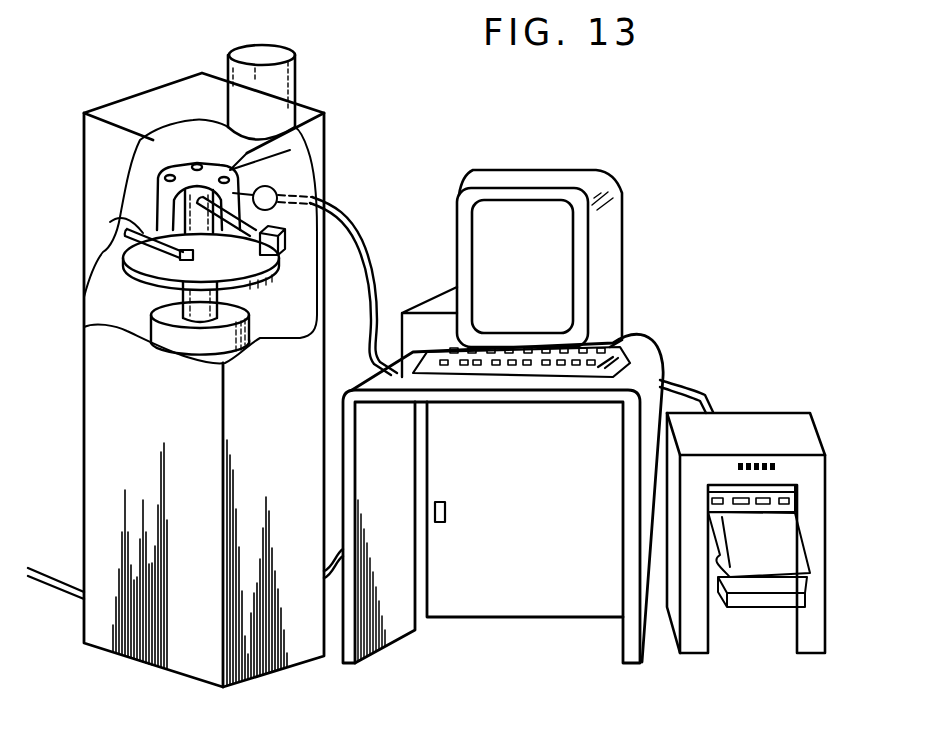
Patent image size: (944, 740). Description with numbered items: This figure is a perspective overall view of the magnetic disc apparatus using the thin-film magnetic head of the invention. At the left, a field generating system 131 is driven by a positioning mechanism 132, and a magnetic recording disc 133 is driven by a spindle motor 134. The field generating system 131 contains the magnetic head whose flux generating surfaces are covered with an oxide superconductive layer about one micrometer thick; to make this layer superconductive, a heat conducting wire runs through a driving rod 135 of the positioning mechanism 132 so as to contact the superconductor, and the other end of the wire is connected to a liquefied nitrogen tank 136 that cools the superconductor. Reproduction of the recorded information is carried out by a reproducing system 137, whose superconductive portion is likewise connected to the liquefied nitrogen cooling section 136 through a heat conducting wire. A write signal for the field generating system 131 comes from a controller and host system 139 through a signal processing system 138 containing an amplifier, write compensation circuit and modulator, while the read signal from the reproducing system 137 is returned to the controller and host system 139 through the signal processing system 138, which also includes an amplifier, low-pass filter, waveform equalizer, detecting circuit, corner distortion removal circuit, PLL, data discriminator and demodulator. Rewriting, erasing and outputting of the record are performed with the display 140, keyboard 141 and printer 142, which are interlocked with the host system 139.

The field generating system 131 is at (283, 236).
The positioning mechanism 132 is at (183, 212).
The magnetic recording disc 133 is at (180, 280).
The spindle motor 134 is at (183, 347).
The driving rod 135 is at (247, 255).
The liquefied nitrogen tank 136 is at (296, 73).
The reproducing system 137 is at (135, 231).
The signal processing system 138 is at (433, 303).
The controller and host system 139 is at (520, 605).
The display 140 is at (565, 273).
The keyboard 141 is at (638, 345).
The printer 142 is at (775, 422).